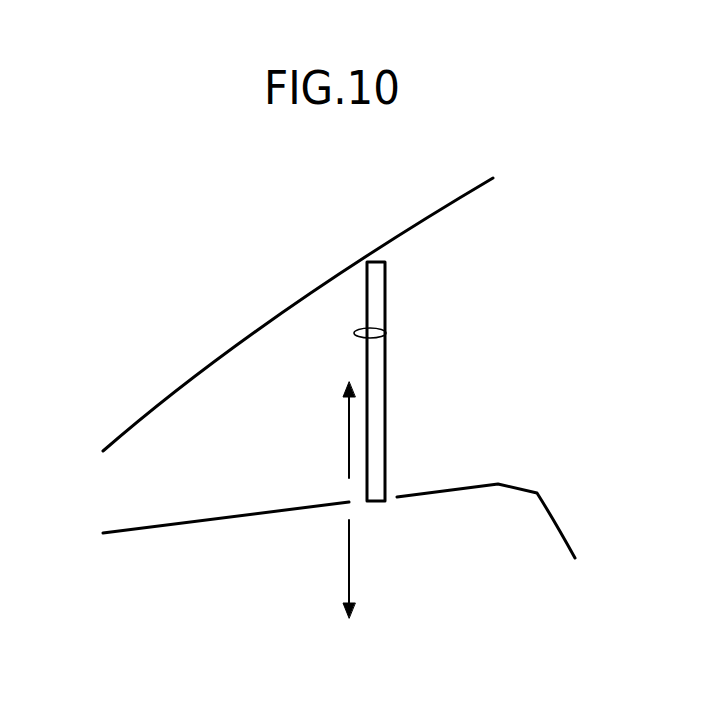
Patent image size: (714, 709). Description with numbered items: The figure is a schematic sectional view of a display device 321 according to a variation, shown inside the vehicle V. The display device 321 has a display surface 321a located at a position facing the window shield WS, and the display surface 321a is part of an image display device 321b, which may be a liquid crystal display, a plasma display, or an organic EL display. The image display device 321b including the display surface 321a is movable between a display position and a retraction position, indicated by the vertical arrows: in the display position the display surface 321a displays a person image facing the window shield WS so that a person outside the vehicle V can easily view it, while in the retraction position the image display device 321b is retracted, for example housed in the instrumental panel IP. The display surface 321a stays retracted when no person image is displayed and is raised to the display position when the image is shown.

The display device 321 is at (464, 381).
The display surface 321a is at (385, 336).
The image display device 321b is at (373, 299).
The window shield WS is at (445, 202).
The instrumental panel IP is at (520, 486).
The vehicle V is at (205, 288).